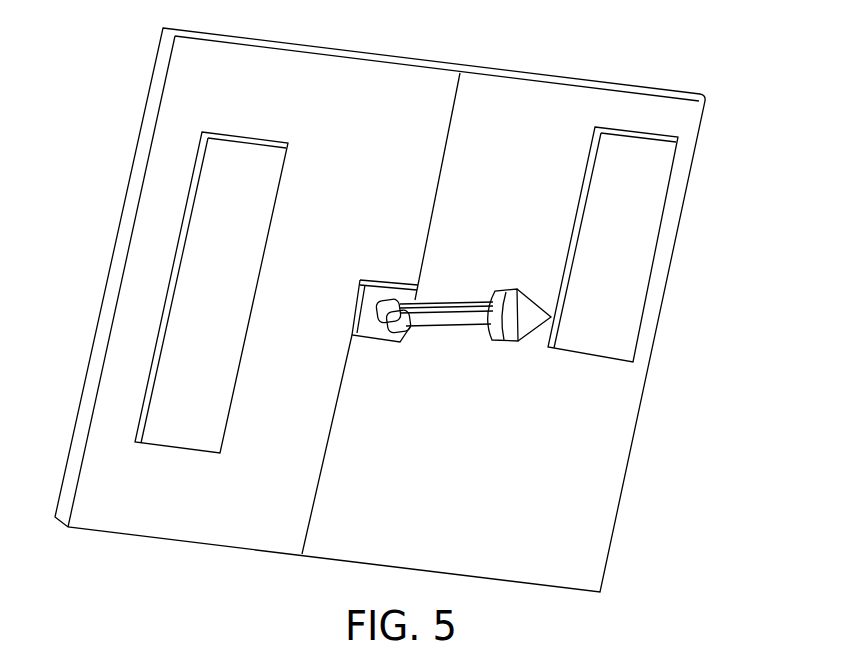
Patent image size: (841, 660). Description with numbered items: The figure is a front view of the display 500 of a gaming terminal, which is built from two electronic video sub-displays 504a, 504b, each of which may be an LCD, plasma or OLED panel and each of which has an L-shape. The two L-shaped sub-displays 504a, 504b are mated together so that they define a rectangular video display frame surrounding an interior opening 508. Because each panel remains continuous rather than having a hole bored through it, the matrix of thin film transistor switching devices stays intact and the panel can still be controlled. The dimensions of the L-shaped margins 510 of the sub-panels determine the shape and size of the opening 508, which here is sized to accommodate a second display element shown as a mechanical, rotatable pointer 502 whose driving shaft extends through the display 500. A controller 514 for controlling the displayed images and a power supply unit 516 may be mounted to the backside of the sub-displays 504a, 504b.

The display 500 is at (746, 152).
The pointer 502 is at (472, 307).
The sub-display 504a is at (343, 121).
The sub-display 504b is at (451, 430).
The interior opening 508 is at (400, 342).
The L-shaped margins 510 is at (427, 208).
The controller 514 is at (640, 222).
The power supply unit 516 is at (157, 228).